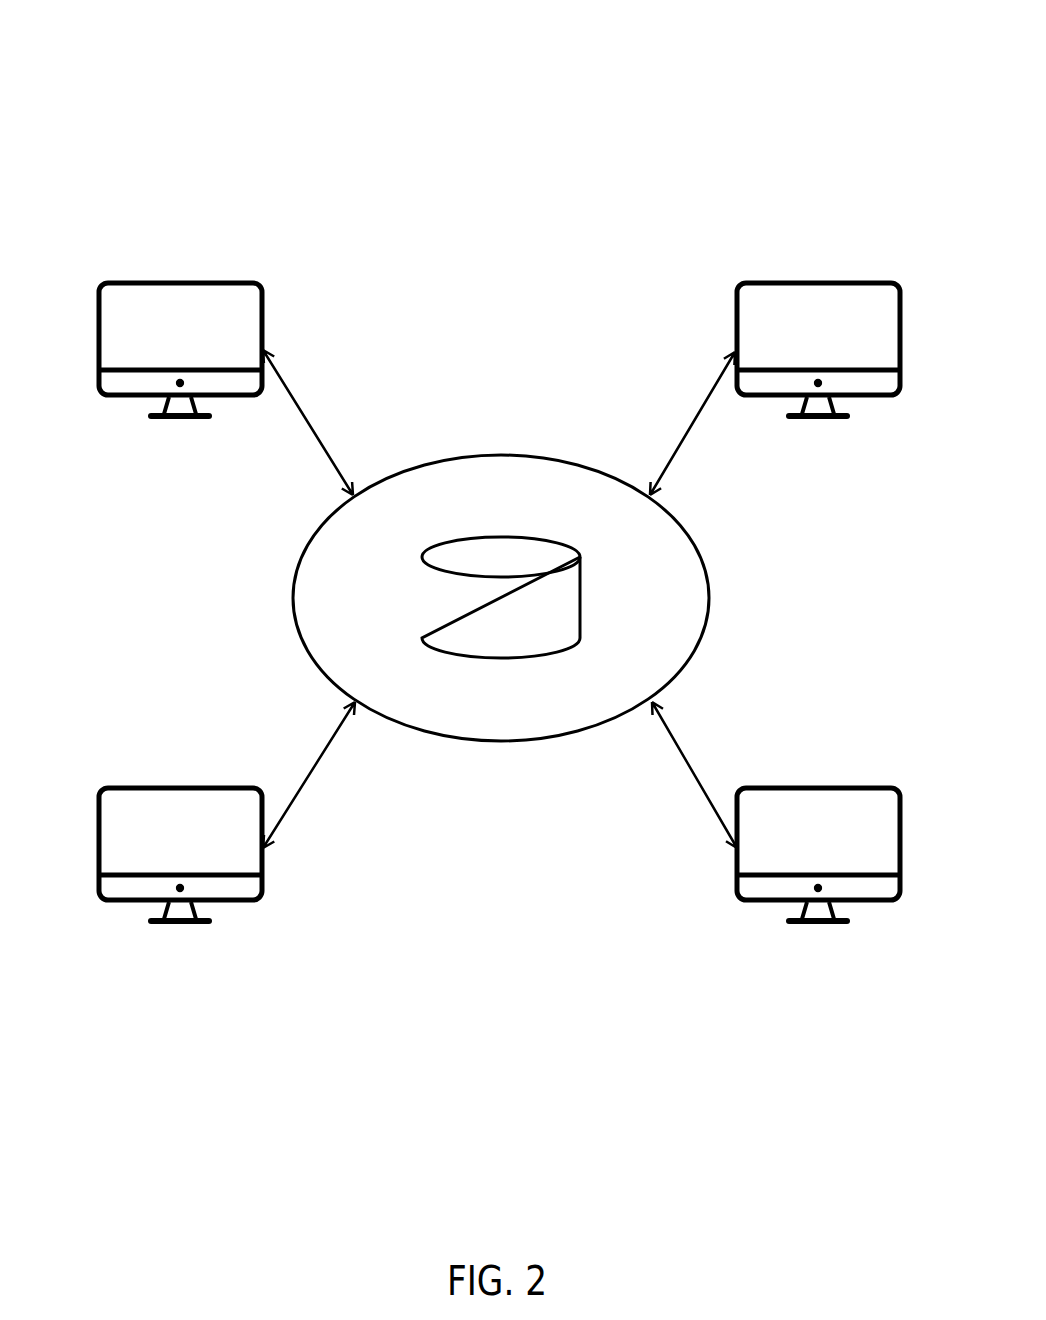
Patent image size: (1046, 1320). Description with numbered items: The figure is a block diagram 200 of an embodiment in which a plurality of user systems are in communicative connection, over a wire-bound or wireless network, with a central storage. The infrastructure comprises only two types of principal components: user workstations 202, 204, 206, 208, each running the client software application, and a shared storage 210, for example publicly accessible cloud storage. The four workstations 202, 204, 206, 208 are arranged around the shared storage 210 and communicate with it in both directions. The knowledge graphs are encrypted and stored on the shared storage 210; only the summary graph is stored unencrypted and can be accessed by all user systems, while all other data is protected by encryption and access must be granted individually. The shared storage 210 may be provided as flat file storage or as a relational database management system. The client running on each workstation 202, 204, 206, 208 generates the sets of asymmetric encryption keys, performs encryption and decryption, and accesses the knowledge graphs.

The block diagram 200 is at (233, 117).
The user workstation 202 is at (208, 346).
The user workstation 204 is at (846, 346).
The user workstation 206 is at (208, 851).
The user workstation 208 is at (846, 851).
The shared storage 210 is at (474, 641).